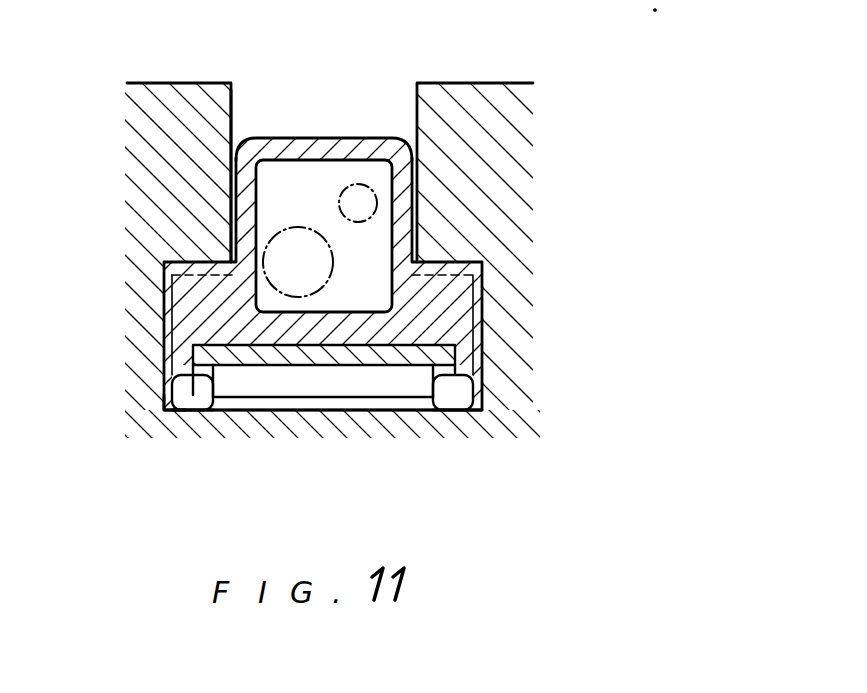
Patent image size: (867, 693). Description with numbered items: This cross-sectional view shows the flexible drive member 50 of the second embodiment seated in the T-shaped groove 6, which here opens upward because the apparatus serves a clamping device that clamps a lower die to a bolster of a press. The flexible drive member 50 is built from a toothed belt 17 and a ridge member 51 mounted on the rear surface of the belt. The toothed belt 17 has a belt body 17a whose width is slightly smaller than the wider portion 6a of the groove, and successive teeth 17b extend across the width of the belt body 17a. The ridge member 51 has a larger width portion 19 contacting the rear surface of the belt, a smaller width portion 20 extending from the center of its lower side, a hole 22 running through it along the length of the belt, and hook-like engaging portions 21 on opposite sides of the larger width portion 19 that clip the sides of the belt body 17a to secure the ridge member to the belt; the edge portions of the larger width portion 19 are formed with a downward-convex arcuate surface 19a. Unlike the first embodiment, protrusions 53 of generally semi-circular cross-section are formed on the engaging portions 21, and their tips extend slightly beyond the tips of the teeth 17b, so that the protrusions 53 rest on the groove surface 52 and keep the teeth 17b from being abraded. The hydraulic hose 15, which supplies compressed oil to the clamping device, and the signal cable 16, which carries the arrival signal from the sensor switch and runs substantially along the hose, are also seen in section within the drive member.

The T-shaped groove 6 is at (236, 128).
The wider portion 6a is at (175, 413).
The hydraulic hose 15 is at (335, 246).
The signal cable 16 is at (376, 191).
The toothed belt 17 is at (402, 400).
The belt body 17a is at (455, 345).
The teeth 17b is at (275, 387).
The larger width portion 19 is at (440, 307).
The arcuate surface 19a is at (202, 266).
The smaller width portion 20 is at (290, 140).
The engaging portions 21 is at (200, 373).
The hole 22 is at (235, 160).
The flexible drive member 50 is at (350, 138).
The ridge member 51 is at (328, 137).
The groove surface 52 is at (331, 407).
The protrusions 53 is at (202, 412).